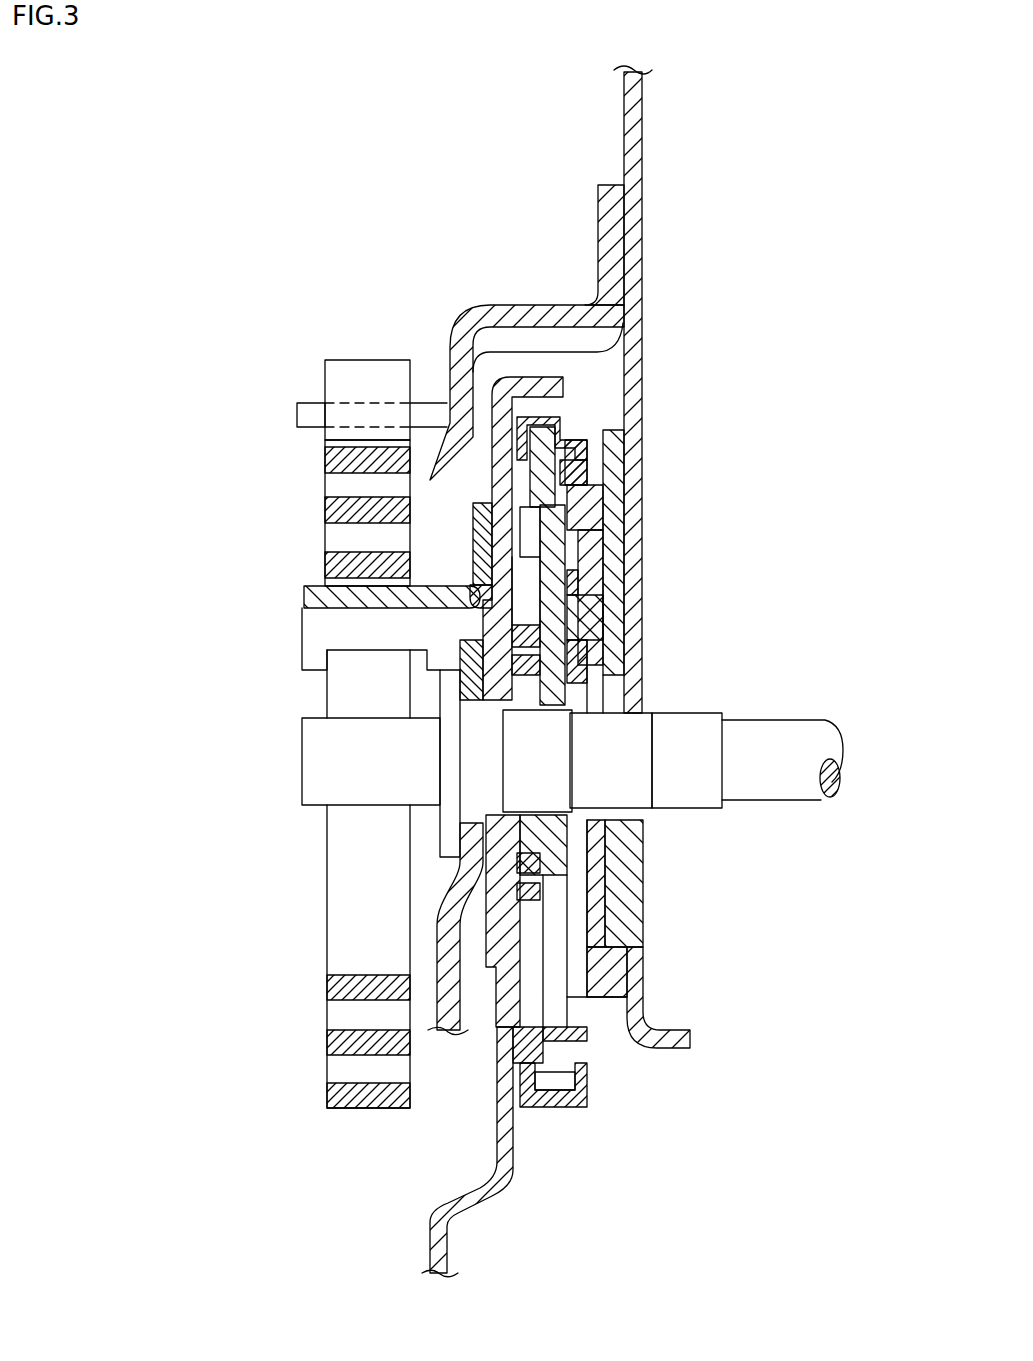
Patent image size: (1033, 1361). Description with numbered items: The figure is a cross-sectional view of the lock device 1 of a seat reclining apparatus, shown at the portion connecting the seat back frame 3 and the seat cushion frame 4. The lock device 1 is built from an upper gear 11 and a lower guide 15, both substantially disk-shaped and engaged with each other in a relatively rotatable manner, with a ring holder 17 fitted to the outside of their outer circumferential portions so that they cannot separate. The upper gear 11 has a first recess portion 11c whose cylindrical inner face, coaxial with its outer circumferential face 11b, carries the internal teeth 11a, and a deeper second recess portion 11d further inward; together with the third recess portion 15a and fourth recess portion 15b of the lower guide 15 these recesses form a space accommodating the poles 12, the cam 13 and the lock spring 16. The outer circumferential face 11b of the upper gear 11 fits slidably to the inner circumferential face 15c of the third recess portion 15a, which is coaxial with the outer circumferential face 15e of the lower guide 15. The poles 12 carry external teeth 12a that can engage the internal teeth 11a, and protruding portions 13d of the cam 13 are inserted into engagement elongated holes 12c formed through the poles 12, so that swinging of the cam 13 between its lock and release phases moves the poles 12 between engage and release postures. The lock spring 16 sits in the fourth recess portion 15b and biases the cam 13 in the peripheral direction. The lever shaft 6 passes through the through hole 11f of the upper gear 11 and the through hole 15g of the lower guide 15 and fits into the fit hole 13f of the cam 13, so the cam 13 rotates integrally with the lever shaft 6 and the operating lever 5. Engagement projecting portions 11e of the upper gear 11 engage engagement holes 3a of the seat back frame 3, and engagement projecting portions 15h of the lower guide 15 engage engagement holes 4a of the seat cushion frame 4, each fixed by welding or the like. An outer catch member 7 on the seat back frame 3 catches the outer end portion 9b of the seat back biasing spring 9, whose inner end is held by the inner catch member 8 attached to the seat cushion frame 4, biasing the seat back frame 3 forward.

The lock device 1 is at (452, 643).
The seat back frame 3 is at (643, 125).
The engagement holes 3a is at (641, 950).
The seat cushion frame 4 is at (430, 1237).
The engagement holes 4a is at (480, 530).
The operating lever 5 is at (460, 882).
The lever shaft 6 is at (790, 730).
The outer catch member 7 is at (455, 345).
The inner catch member 8 is at (304, 596).
The seat back biasing spring 9 is at (325, 487).
The outer end portion 9b is at (350, 372).
The upper gear 11 is at (610, 1036).
The internal teeth 11a is at (605, 1003).
The outer circumferential face 11b is at (578, 1066).
The first recess portion 11c is at (590, 515).
The second recess portion 11d is at (490, 602).
The engagement projecting portions 11e is at (620, 910).
The through hole 11f is at (592, 705).
The poles 12 is at (600, 575).
The external teeth 12a is at (575, 470).
The engagement elongated holes 12c is at (583, 610).
The cam 13 is at (600, 668).
The protruding portions 13d is at (600, 632).
The fit hole 13f is at (565, 808).
The lower guide 15 is at (483, 948).
The third recess portion 15a is at (578, 460).
The fourth recess portion 15b is at (605, 882).
The inner circumferential face 15c is at (525, 1042).
The outer circumferential face 15e is at (542, 400).
The through hole 15g is at (462, 735).
The engagement projecting portions 15h is at (482, 590).
The lock spring 16 is at (540, 672).
The ring holder 17 is at (545, 1108).